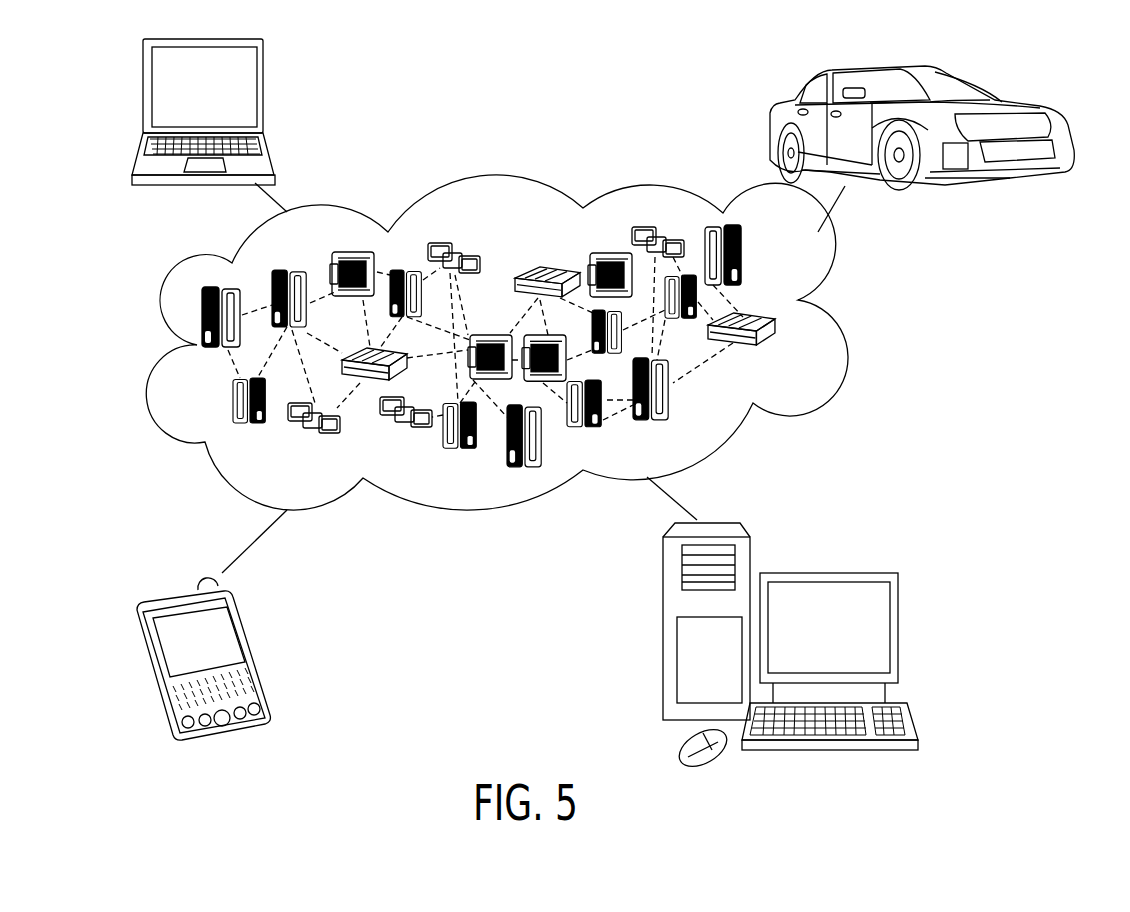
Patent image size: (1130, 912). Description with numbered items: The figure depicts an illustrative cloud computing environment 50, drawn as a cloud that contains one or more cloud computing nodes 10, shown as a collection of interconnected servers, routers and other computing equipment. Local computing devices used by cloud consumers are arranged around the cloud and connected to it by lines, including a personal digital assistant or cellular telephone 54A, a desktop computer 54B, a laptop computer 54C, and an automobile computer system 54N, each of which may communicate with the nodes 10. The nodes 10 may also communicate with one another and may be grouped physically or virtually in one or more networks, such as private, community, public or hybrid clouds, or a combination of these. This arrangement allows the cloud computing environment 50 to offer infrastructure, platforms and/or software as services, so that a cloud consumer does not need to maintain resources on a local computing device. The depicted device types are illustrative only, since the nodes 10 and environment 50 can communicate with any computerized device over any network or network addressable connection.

The cloud computing environment 50 is at (842, 337).
The cloud computing node 10 is at (792, 353).
The personal digital assistant or cellular telephone 54A is at (253, 653).
The desktop computer 54B is at (860, 573).
The laptop computer 54C is at (264, 103).
The automobile computer system 54N is at (970, 95).